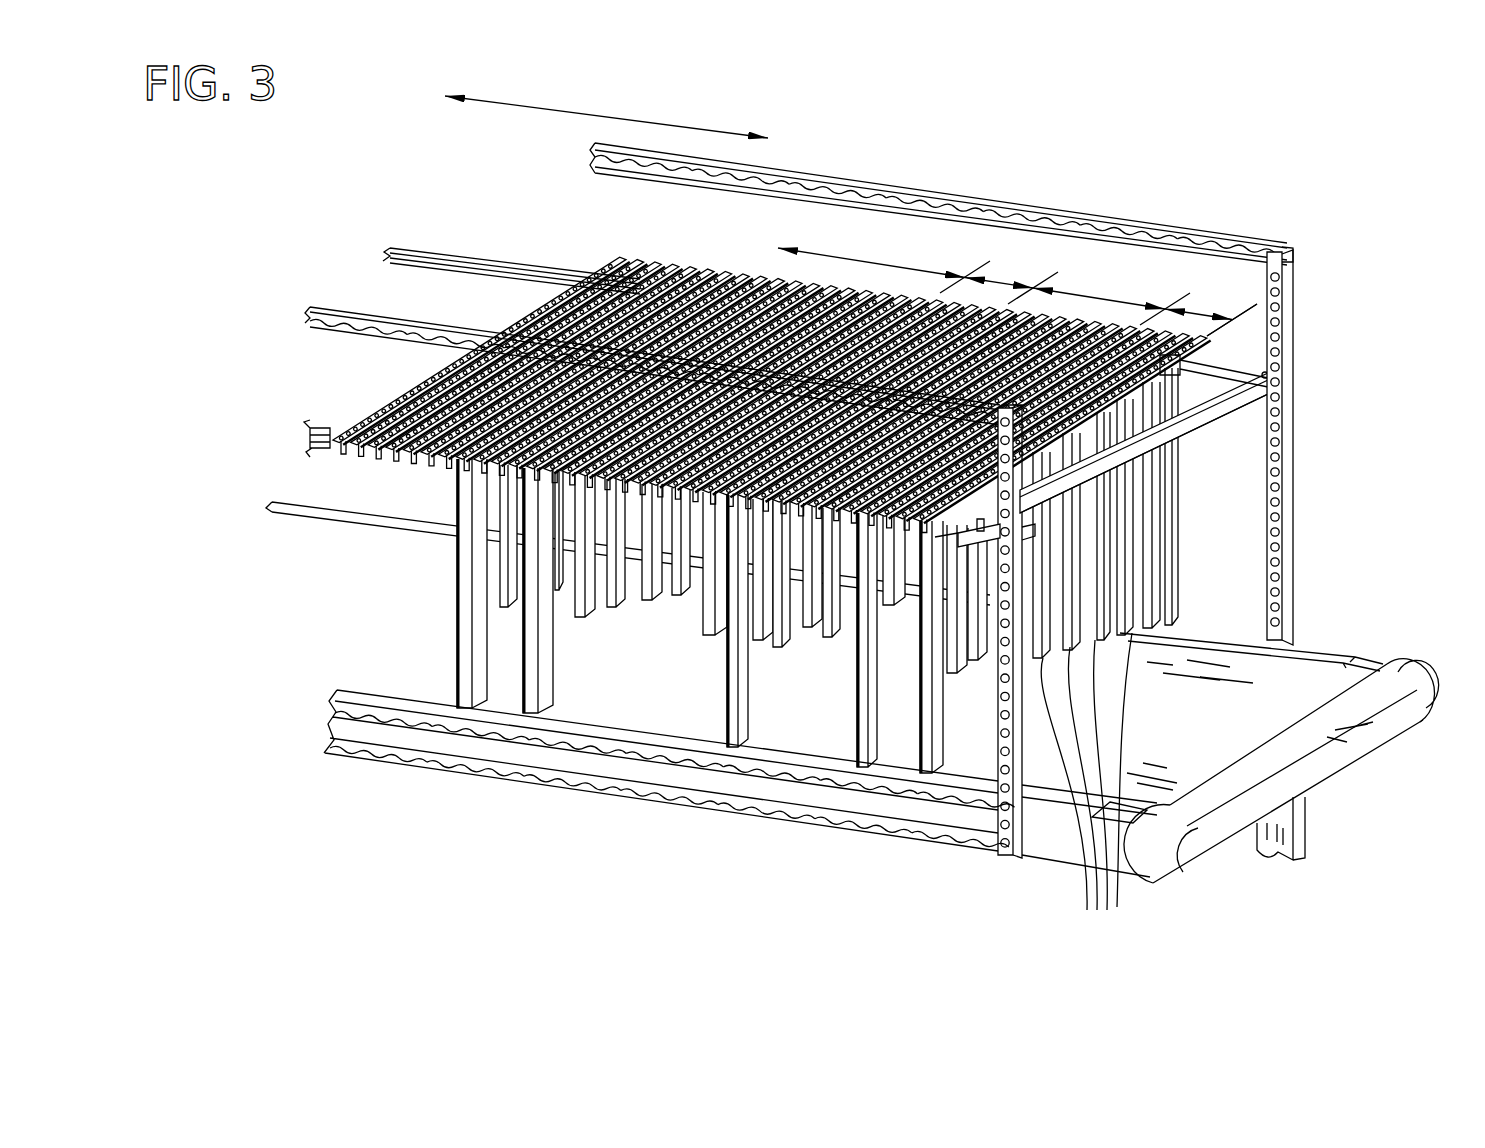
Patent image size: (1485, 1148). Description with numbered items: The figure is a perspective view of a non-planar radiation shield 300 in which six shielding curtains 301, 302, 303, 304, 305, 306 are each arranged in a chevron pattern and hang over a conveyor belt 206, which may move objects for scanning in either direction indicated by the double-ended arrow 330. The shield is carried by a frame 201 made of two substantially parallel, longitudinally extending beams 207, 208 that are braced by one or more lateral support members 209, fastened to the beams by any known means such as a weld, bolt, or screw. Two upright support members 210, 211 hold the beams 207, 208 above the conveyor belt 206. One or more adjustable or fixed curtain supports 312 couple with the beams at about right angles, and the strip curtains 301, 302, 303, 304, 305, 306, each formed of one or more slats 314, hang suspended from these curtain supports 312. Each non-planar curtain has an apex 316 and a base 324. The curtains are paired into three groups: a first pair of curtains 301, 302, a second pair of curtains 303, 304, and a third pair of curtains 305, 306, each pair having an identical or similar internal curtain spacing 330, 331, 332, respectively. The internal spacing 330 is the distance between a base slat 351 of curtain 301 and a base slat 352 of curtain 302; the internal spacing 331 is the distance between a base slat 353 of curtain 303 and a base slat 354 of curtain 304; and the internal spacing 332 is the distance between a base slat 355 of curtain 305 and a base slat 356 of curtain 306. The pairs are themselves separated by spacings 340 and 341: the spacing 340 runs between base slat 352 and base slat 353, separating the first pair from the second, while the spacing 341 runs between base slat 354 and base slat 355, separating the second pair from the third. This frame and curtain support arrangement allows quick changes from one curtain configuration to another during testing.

The frame 201 is at (1000, 394).
The conveyor belt 206 is at (1279, 758).
The beam 207 is at (309, 447).
The beam 208 is at (470, 252).
The lateral support member 209 is at (1189, 443).
The upright support member 210 is at (997, 745).
The upright support member 211 is at (1293, 522).
The radiation shield 300 is at (729, 331).
The shielding curtain 301 is at (457, 476).
The shielding curtain 302 is at (463, 545).
The shielding curtain 303 is at (647, 505).
The shielding curtain 304 is at (692, 505).
The shielding curtain 305 is at (818, 530).
The shielding curtain 306 is at (968, 530).
The curtain support 312 is at (729, 363).
The slat 314 is at (1086, 787).
The apex 316 is at (505, 329).
The base 324 is at (920, 748).
The internal curtain spacing 330 is at (602, 114).
The internal curtain spacing 331 is at (1007, 288).
The internal curtain spacing 332 is at (1212, 312).
The spacing 340 is at (903, 272).
The spacing 341 is at (1103, 298).
The base slat 351 is at (565, 268).
The base slat 352 is at (612, 266).
The base slat 353 is at (665, 268).
The base slat 354 is at (735, 275).
The base slat 355 is at (1190, 433).
The base slat 356 is at (1255, 363).